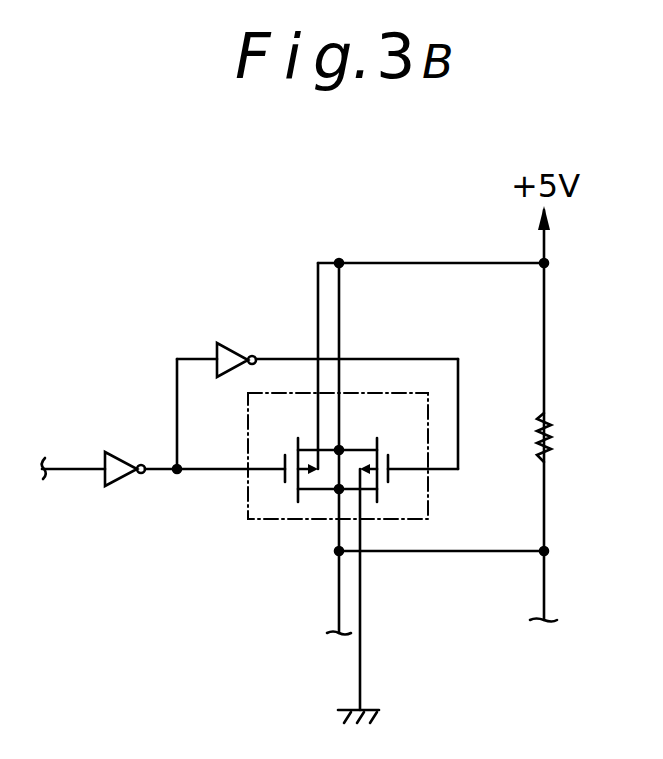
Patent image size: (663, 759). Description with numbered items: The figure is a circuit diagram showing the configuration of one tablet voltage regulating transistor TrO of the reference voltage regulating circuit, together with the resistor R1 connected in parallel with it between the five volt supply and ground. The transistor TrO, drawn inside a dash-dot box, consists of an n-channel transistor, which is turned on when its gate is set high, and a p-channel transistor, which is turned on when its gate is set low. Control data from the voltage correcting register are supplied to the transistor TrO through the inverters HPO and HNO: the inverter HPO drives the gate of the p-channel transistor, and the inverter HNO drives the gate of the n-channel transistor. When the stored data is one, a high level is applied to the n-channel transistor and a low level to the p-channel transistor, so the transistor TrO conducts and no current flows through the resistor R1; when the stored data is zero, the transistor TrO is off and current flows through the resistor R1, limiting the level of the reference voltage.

The inverter HNO is at (232, 342).
The inverter HPO is at (118, 453).
The tablet voltage regulating transistor TrO is at (420, 505).
The resistor R1 is at (552, 428).